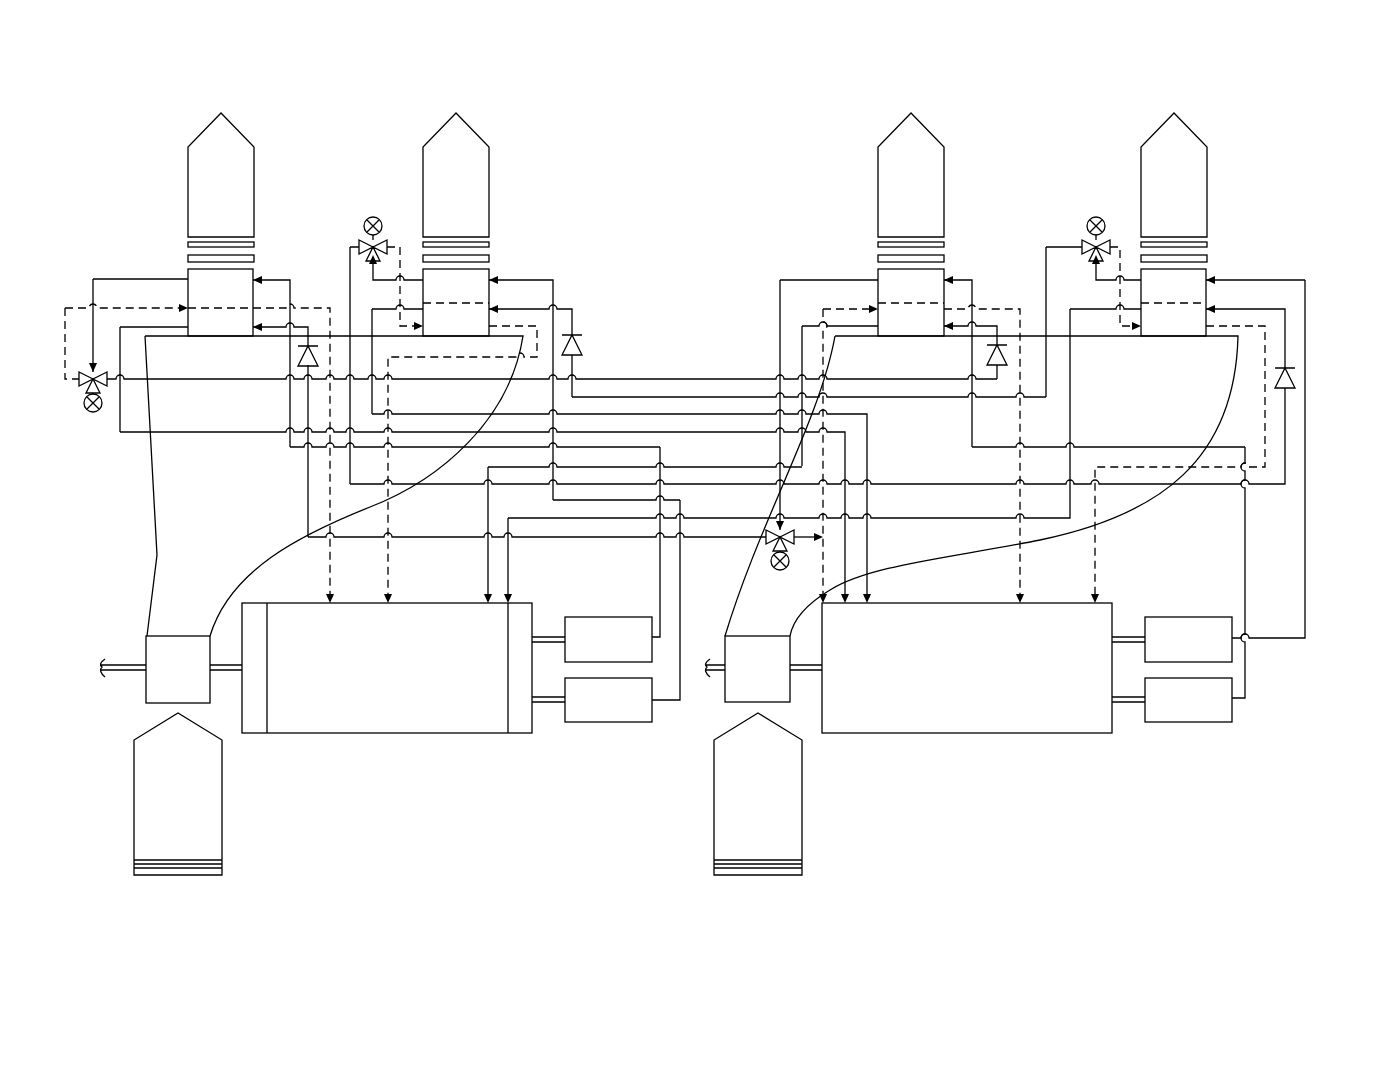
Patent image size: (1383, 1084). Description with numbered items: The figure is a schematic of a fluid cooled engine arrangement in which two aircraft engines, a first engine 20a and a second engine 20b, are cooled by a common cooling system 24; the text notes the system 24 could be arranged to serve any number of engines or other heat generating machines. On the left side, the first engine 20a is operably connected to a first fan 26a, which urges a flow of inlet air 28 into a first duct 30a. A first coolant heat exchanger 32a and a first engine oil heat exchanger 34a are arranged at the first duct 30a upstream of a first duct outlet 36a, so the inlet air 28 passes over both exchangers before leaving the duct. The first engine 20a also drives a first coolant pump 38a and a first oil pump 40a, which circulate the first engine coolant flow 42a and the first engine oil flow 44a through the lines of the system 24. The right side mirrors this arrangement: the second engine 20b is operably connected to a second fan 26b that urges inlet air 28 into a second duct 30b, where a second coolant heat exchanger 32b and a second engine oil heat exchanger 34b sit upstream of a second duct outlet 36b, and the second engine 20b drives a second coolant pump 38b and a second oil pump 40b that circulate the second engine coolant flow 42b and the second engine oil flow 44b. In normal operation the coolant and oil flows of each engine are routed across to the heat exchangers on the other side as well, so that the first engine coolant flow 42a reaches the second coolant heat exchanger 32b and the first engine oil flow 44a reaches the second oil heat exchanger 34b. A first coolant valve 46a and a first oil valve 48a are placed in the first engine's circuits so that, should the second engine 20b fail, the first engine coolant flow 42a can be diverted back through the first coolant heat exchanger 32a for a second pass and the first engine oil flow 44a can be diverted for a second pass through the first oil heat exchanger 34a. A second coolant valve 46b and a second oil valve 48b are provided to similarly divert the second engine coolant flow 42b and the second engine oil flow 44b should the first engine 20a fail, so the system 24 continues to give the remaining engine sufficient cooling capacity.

The cooling system 24 is at (127, 111).
The first duct outlet 36a is at (323, 176).
The second duct outlet 36b is at (1045, 176).
The first coolant heat exchanger 32a is at (203, 280).
The first engine oil heat exchanger 34a is at (468, 280).
The second coolant heat exchanger 32b is at (925, 277).
The second engine oil heat exchanger 34b is at (1188, 277).
The first oil valve 48a is at (372, 216).
The second oil valve 48b is at (1097, 216).
The first coolant valve 46a is at (90, 413).
The second coolant valve 46b is at (779, 572).
The first duct 30a is at (172, 523).
The second duct 30b is at (920, 557).
The first fan 26a is at (162, 682).
The second fan 26b is at (748, 690).
The inlet air 28 is at (147, 800).
The first engine 20a is at (392, 730).
The second engine 20b is at (1055, 727).
The first coolant pump 38a is at (607, 625).
The first oil pump 40a is at (610, 713).
The second coolant pump 38b is at (1180, 713).
The second oil pump 40b is at (1178, 622).
The first engine coolant flow 42a is at (660, 600).
The first engine oil flow 44a is at (680, 585).
The second engine coolant flow 42b is at (1245, 665).
The second engine oil flow 44b is at (1305, 585).